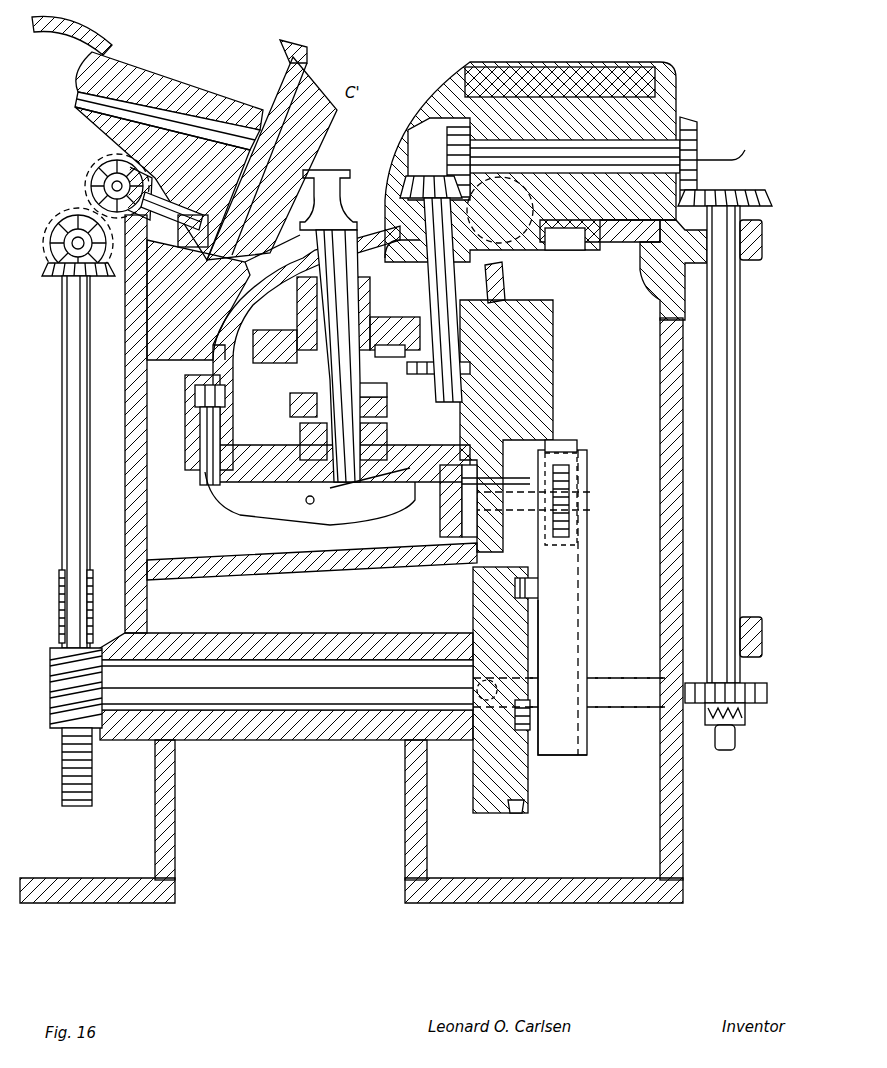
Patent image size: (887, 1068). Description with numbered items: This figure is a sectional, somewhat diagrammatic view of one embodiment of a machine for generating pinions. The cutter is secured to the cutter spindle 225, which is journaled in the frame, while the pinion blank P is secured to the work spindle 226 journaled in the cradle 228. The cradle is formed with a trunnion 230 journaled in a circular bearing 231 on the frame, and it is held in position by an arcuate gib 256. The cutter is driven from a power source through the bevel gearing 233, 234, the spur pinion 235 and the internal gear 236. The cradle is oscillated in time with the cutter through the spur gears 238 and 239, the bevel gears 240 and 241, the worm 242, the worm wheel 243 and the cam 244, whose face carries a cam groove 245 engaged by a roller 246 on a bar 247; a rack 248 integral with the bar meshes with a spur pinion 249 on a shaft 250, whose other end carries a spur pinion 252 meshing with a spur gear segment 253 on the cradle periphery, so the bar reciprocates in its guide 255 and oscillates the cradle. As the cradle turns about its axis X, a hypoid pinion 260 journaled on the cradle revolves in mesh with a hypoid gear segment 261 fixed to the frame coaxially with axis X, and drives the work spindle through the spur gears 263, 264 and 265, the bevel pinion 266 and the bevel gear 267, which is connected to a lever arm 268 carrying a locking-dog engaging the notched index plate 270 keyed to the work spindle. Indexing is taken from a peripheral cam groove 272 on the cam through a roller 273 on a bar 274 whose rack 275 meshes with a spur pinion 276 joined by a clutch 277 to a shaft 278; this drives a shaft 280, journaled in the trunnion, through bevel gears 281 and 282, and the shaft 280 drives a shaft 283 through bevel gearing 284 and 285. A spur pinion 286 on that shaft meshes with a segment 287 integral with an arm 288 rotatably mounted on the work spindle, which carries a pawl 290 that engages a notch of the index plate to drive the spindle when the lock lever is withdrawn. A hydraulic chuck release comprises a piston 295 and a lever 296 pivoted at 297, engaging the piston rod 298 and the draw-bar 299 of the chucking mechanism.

The cutter spindle 225 is at (212, 95).
The work spindle 226 is at (268, 260).
The cradle 228 is at (215, 322).
The trunnion 230 is at (610, 80).
The circular bearing 231 is at (530, 77).
The bevel gearing 233 is at (100, 160).
The bevel gearing 234 is at (140, 203).
The spur pinion 235 is at (192, 250).
The internal gear 236 is at (285, 46).
The spur gear 238 is at (90, 177).
The spur gear 239 is at (52, 232).
The bevel gear 240 is at (62, 280).
The bevel gear 241 is at (95, 276).
The worm 242 is at (52, 718).
The worm wheel 243 is at (92, 800).
The cam 244 is at (480, 778).
The cam groove 245 is at (530, 722).
The roller 246 is at (538, 580).
The bar 247 is at (587, 604).
The rack 248 is at (580, 446).
The spur pinion 249 is at (572, 489).
The shaft 250 is at (548, 490).
The spur pinion 252 is at (462, 500).
The spur gear segment 253 is at (448, 480).
The guide 255 is at (587, 560).
The arcuate gib 256 is at (465, 484).
The hypoid pinion 260 is at (548, 262).
The hypoid gear segment 261 is at (495, 303).
The spur gear 263 is at (560, 247).
The spur gear 264 is at (388, 245).
The spur gear 265 is at (297, 318).
The bevel pinion 266 is at (290, 300).
The bevel gear 267 is at (215, 350).
The lever arm 268 is at (265, 415).
The notched index plate 270 is at (408, 380).
The peripheral cam groove 272 is at (515, 813).
The roller 273 is at (483, 680).
The bar 274 is at (620, 676).
The rack 275 is at (762, 690).
The spur pinion 276 is at (745, 715).
The clutch 277 is at (715, 735).
The shaft 278 is at (742, 485).
The shaft 280 is at (660, 150).
The bevel gear 281 is at (750, 200).
The bevel gear 282 is at (690, 135).
The shaft 283 is at (432, 262).
The bevel gearing 284 is at (450, 128).
The bevel gearing 285 is at (408, 178).
The spur pinion 286 is at (472, 368).
The segment 287 is at (403, 345).
The arm 288 is at (375, 318).
The pawl 290 is at (190, 415).
The piston 295 is at (200, 395).
The lever 296 is at (268, 508).
The pivot 297 is at (310, 505).
The piston rod 298 is at (205, 480).
The draw-bar 299 is at (355, 482).
The pinion blank P is at (335, 326).
The cradle axis X is at (726, 149).